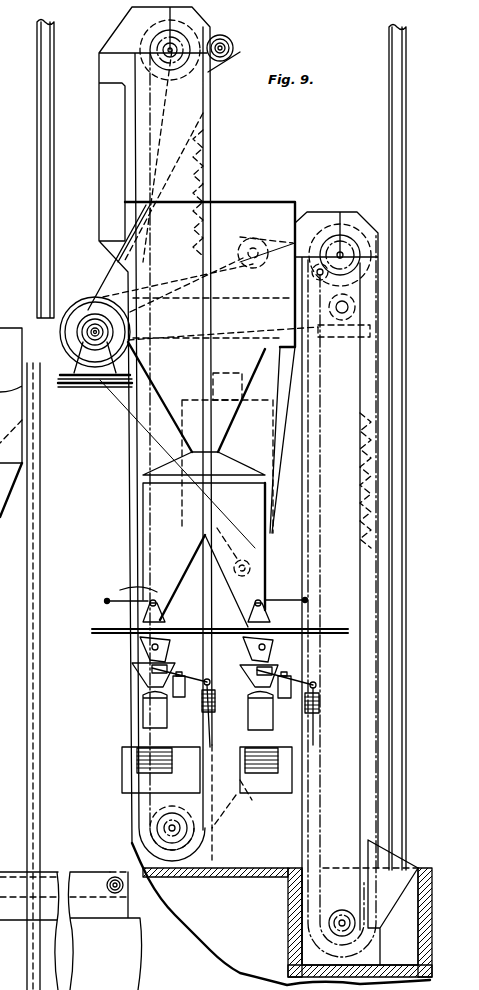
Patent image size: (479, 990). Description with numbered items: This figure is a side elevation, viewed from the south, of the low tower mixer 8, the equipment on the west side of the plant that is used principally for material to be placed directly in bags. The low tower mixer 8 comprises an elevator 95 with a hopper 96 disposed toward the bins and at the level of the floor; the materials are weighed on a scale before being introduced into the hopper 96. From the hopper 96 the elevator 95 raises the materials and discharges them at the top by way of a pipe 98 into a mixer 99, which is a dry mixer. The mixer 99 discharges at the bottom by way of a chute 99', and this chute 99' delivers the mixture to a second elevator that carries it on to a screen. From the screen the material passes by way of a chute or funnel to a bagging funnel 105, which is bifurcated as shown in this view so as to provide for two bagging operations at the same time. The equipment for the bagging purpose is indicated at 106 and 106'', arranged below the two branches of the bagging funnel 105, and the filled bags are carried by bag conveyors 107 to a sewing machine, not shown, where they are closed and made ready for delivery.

The low tower mixer 8 is at (243, 202).
The elevator 95 is at (328, 835).
The hopper 96 is at (402, 895).
The pipe 98 is at (212, 362).
The mixer 99 is at (200, 484).
The chute 99' is at (237, 804).
The bagging funnel 105 is at (157, 591).
The bagging equipment 106 is at (192, 434).
The pivoted bracket 106'' is at (170, 651).
The bag conveyors 107 is at (148, 747).